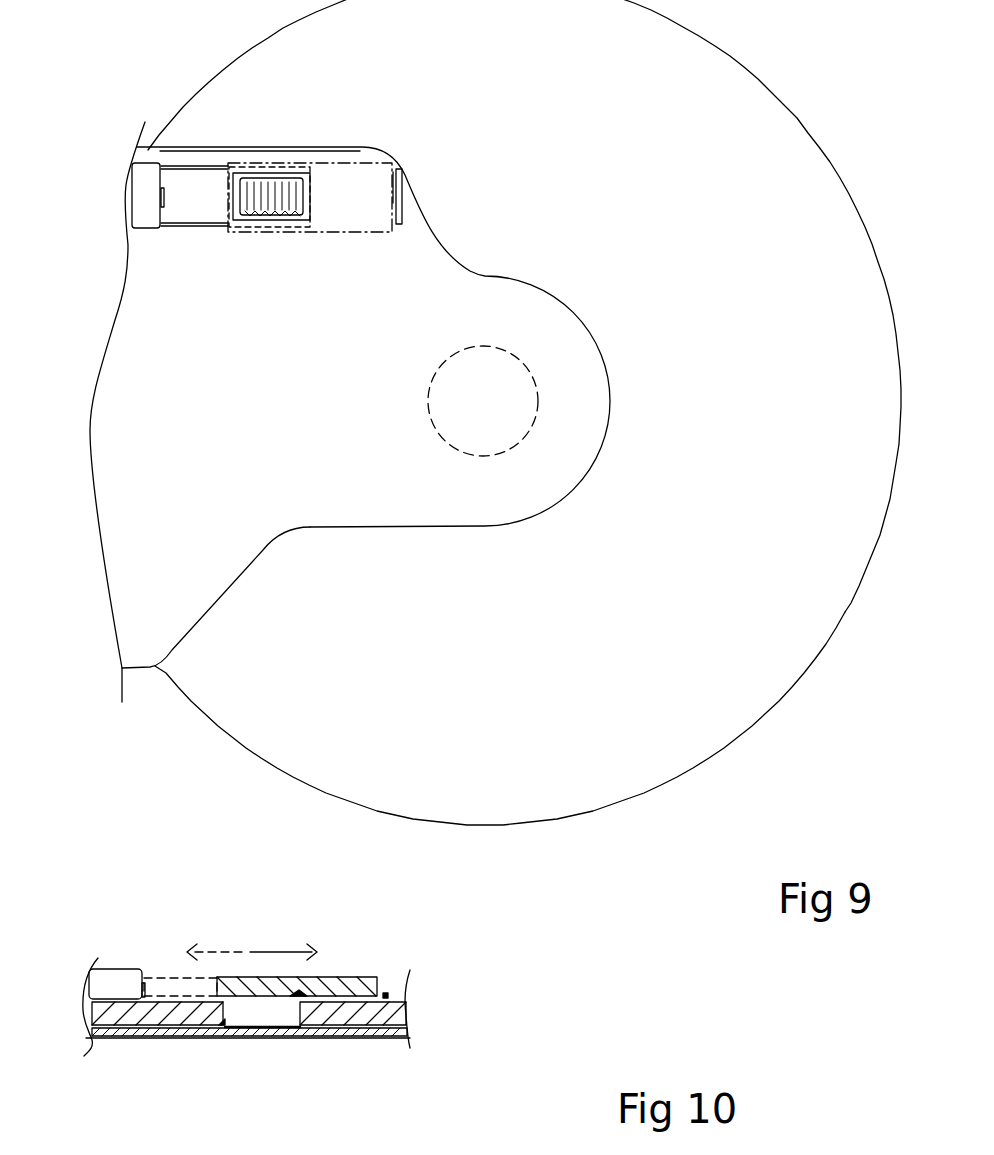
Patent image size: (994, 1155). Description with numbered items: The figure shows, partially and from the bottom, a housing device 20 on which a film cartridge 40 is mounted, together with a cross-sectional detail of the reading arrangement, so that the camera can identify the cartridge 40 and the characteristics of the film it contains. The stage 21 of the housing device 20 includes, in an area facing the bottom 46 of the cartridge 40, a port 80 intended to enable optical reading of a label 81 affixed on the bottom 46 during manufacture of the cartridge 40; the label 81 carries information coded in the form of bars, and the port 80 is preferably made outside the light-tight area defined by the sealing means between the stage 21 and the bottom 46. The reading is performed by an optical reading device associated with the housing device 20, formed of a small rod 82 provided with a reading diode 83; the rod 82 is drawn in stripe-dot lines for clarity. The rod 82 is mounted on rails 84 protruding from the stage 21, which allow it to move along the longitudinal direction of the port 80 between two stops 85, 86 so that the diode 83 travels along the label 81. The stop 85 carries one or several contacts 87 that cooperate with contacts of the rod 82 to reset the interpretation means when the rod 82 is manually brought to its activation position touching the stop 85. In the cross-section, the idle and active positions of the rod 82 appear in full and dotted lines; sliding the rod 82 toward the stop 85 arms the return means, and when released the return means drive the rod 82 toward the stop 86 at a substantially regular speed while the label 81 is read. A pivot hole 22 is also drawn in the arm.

In FIG. 9, the housing device 20 is at (372, 612).
In FIG. 9, the stage 21 is at (265, 549).
In FIG. 10, the stage 21 is at (382, 1017).
In FIG. 9, the pivot hole 22 is at (520, 358).
In FIG. 9, the cartridge 40 is at (808, 707).
In FIG. 10, the cartridge 40 is at (380, 1052).
In FIG. 9, the bottom 46 is at (700, 68).
In FIG. 10, the bottom 46 is at (318, 1036).
In FIG. 9, the port 80 is at (308, 198).
In FIG. 10, the port 80 is at (237, 1028).
In FIG. 9, the label 81 is at (282, 182).
In FIG. 10, the label 81 is at (237, 1027).
In FIG. 9, the rod 82 is at (347, 234).
In FIG. 10, the rod 82 is at (163, 977).
In FIG. 10, the reading diode 83 is at (230, 987).
In FIG. 9, the rails 84 is at (196, 170).
In FIG. 9, the stop 85 is at (143, 226).
In FIG. 10, the stop 85 is at (120, 975).
In FIG. 9, the stop 86 is at (400, 200).
In FIG. 10, the stop 86 is at (386, 993).
In FIG. 9, the contacts 87 is at (170, 195).
In FIG. 10, the contacts 87 is at (88, 984).